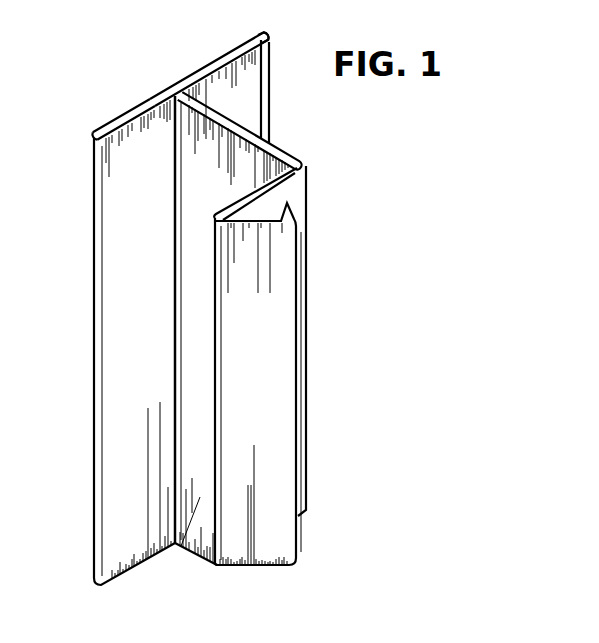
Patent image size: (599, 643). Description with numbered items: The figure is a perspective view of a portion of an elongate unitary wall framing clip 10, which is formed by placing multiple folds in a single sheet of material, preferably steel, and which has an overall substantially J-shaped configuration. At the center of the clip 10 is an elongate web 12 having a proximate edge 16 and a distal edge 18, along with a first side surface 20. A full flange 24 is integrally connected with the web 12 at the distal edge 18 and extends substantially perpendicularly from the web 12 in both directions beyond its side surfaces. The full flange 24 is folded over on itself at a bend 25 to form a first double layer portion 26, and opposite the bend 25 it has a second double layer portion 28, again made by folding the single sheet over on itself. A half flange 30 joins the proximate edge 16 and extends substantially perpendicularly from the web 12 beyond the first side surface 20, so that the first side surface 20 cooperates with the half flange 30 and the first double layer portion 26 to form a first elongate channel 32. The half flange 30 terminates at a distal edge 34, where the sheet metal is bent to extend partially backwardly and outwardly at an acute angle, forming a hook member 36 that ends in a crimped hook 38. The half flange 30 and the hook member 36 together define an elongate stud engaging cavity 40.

The wall framing clip 10 is at (91, 79).
The web 12 is at (248, 125).
The proximate edge 16 is at (298, 162).
The distal edge 18 is at (188, 78).
The first side surface 20 is at (179, 548).
The full flange 24 is at (151, 99).
The bend 25 is at (90, 137).
The first double layer portion 26 is at (116, 121).
The second double layer portion 28 is at (265, 33).
The half flange 30 is at (306, 164).
The first elongate channel 32 is at (160, 322).
The distal edge of half flange 34 is at (216, 282).
The hook member 36 is at (257, 238).
The hook 38 is at (293, 213).
The stud engaging cavity 40 is at (272, 210).